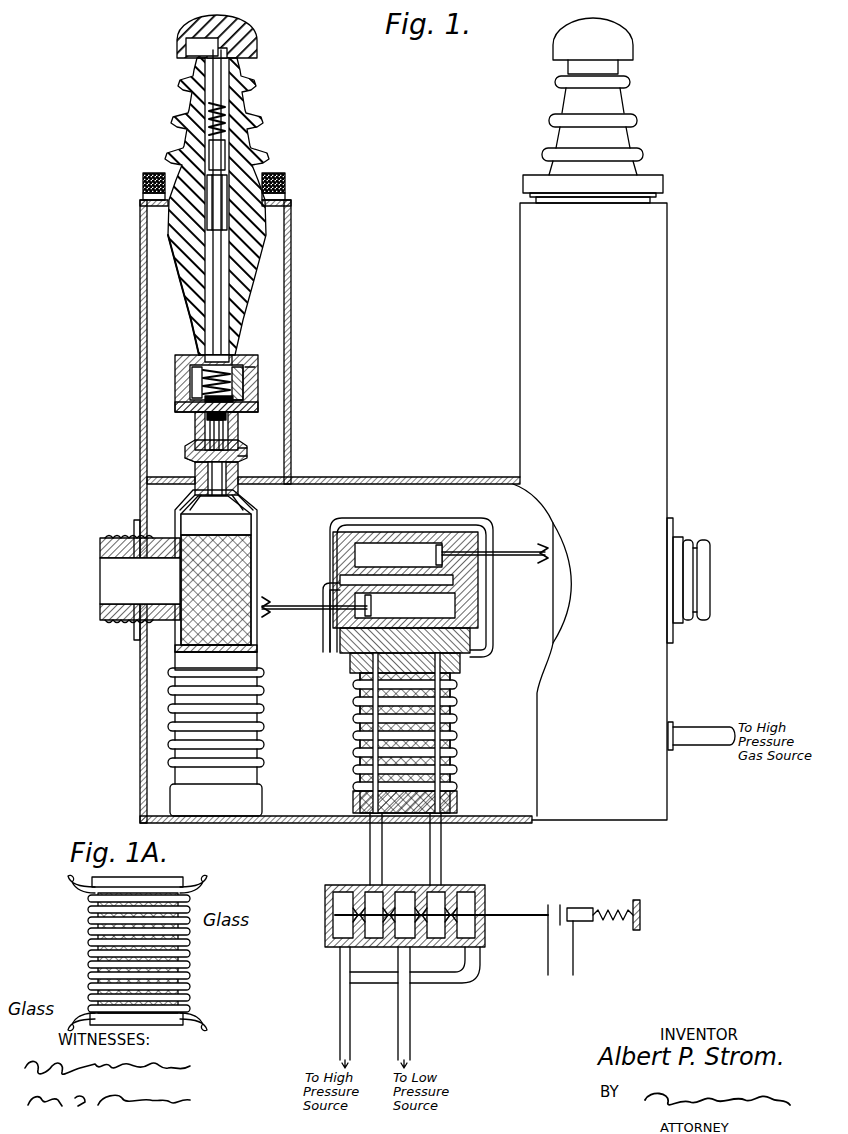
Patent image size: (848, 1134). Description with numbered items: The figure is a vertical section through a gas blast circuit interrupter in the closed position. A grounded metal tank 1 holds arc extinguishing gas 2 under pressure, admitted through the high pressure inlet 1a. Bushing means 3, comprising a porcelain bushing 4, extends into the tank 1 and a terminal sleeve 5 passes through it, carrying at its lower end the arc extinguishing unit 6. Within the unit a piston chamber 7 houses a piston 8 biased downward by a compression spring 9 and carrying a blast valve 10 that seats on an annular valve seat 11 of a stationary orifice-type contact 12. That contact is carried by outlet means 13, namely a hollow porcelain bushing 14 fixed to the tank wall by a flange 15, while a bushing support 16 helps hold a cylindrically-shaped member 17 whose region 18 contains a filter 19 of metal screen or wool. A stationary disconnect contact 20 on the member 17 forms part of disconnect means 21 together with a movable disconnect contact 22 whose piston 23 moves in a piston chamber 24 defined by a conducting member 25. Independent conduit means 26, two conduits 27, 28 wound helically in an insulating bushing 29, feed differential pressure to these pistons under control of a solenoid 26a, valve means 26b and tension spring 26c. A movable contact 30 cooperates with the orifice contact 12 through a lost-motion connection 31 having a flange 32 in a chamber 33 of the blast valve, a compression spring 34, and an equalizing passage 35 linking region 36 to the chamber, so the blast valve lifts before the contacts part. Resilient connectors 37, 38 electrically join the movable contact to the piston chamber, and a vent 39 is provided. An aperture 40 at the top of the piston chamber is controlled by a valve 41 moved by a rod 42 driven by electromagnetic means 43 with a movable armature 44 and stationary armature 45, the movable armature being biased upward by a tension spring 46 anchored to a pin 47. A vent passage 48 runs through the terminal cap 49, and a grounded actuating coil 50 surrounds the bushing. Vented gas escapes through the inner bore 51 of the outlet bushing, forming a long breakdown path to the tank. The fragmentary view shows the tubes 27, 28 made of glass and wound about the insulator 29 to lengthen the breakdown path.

In FIG. 1, the metal tank 1 is at (291, 298).
In FIG. 1, the high pressure inlet 1a is at (700, 727).
In FIG. 1, the arc extinguishing gas 2 is at (291, 409).
In FIG. 1, the bushing means 3 is at (665, 106).
In FIG. 1, the porcelain bushing 4 is at (552, 120).
In FIG. 1, the terminal sleeve 5 is at (246, 284).
In FIG. 1, the arc extinguishing unit 6 is at (167, 391).
In FIG. 1, the piston chamber 7 is at (246, 395).
In FIG. 1, the piston 8 is at (250, 409).
In FIG. 1, the compression spring 9 is at (245, 383).
In FIG. 1, the blast valve 10 is at (167, 468).
In FIG. 1, the annular valve seat 11 is at (246, 462).
In FIG. 1, the stationary orifice-type contact 12 is at (246, 488).
In FIG. 1, the outlet means 13 is at (122, 534).
In FIG. 1, the porcelain bushing 14 is at (100, 543).
In FIG. 1, the flange 15 is at (136, 525).
In FIG. 1, the bushing support 16 is at (263, 714).
In FIG. 1, the cylindrically-shaped member 17 is at (257, 545).
In FIG. 1, the region 18 is at (232, 532).
In FIG. 1, the filter of metal screen or wool 19 is at (251, 565).
In FIG. 1, the stationary disconnect contact 20 is at (541, 544).
In FIG. 1, the disconnect means 21 is at (401, 511).
In FIG. 1, the movable disconnect contact 22 is at (508, 553).
In FIG. 1, the piston 23 is at (436, 555).
In FIG. 1, the piston chamber 24 is at (405, 580).
In FIG. 1, the conducting member 25 is at (337, 577).
In FIG. 1, the independent conduit means 26 is at (339, 726).
In FIG. 1, the solenoid 26a is at (564, 906).
In FIG. 1, the valve means 26b is at (398, 885).
In FIG. 1, the tension spring 26c is at (615, 925).
In FIG. 1, the conduit 27 is at (330, 655).
In FIG. 1A, the conduit 27 is at (78, 892).
In FIG. 1, the conduit 28 is at (484, 657).
In FIG. 1A, the conduit 28 is at (205, 898).
In FIG. 1, the bushing 29 is at (457, 736).
In FIG. 1A, the bushing 29 is at (180, 880).
In FIG. 1, the movable contact 30 is at (198, 475).
In FIG. 1, the lost-motion mechanical connection 31 is at (190, 452).
In FIG. 1, the flange 32 is at (200, 432).
In FIG. 1, the chamber 33 is at (178, 410).
In FIG. 1, the compression spring 34 is at (240, 420).
In FIG. 1, the equalizing passage 35 is at (240, 455).
In FIG. 1, the region 36 is at (195, 500).
In FIG. 1, the resilient connector 37 is at (255, 368).
In FIG. 1, the resilient connector 38 is at (235, 438).
In FIG. 1, the vent 39 is at (241, 357).
In FIG. 1, the aperture 40 is at (213, 357).
In FIG. 1, the valve 41 is at (178, 366).
In FIG. 1, the rod 42 is at (222, 256).
In FIG. 1, the electromagnetic means 43 is at (170, 166).
In FIG. 1, the movable armature 44 is at (233, 146).
In FIG. 1, the stationary armature 45 is at (262, 180).
In FIG. 1, the tension spring 46 is at (240, 100).
In FIG. 1, the pin 47 is at (238, 72).
In FIG. 1, the vent passage 48 is at (205, 40).
In FIG. 1, the terminal cap 49 is at (615, 30).
In FIG. 1, the actuating coil 50 is at (665, 183).
In FIG. 1, the inner bore 51 is at (150, 605).